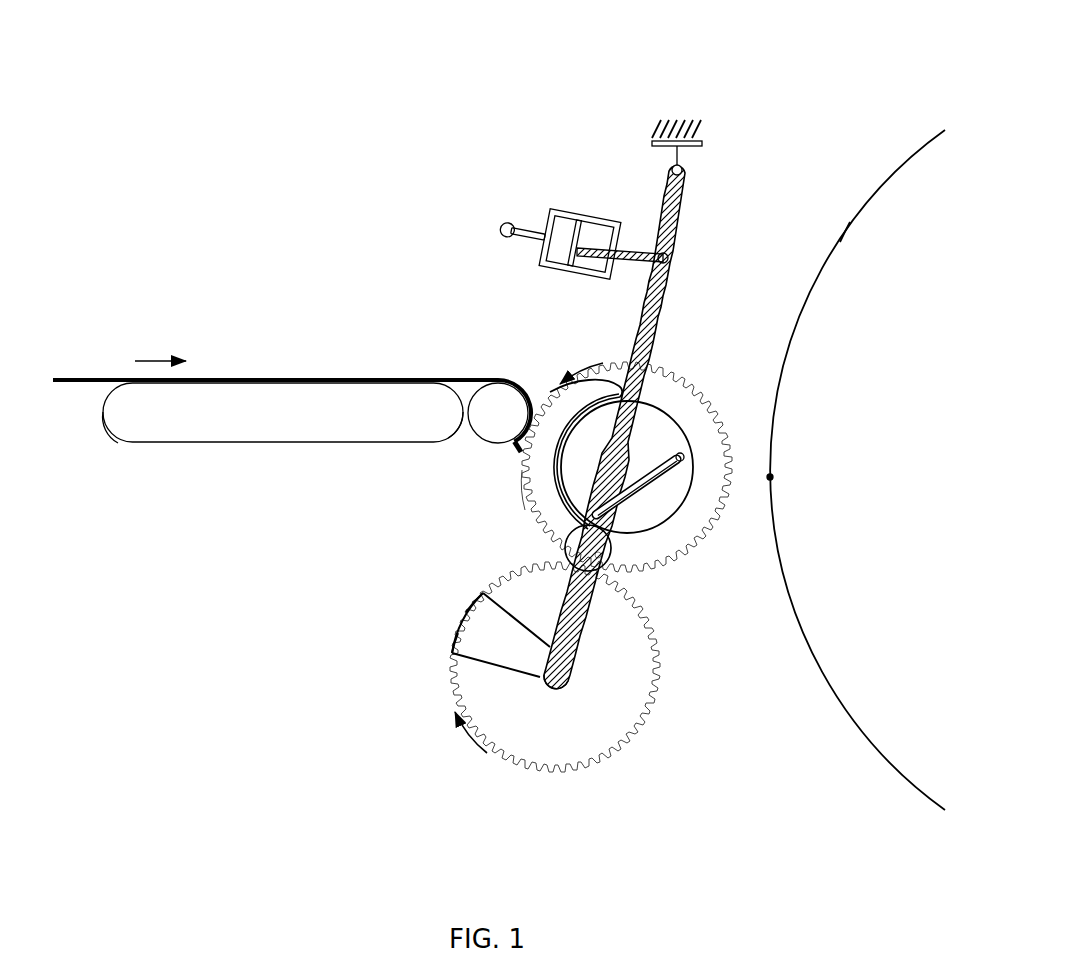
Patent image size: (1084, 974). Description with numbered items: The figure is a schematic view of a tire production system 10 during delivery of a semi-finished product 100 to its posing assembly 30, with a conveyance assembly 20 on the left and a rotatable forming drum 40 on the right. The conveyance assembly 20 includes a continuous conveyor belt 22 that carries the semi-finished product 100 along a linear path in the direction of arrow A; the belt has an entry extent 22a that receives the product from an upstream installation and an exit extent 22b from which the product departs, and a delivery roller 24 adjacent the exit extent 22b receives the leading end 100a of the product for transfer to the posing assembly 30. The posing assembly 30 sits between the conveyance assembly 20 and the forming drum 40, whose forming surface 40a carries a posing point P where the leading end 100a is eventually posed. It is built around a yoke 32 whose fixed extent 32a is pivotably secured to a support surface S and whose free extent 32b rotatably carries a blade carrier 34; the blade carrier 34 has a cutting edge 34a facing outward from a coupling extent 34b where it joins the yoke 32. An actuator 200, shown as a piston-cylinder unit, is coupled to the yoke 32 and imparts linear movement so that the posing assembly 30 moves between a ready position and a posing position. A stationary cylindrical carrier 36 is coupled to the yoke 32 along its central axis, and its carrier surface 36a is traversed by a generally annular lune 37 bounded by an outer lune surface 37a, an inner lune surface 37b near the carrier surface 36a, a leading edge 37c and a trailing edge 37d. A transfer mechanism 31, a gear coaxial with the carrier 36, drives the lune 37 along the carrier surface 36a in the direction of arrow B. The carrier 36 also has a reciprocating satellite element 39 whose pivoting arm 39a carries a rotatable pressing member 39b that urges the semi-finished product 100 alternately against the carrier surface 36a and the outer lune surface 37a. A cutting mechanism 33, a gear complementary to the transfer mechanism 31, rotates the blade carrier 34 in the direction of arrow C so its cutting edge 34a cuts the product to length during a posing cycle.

The tire production system 10 is at (499, 121).
The conveyance assembly 20 is at (257, 289).
The conveyor belt 22 is at (188, 425).
The entry extent 22a is at (118, 443).
The exit extent 22b is at (428, 427).
The delivery roller 24 is at (498, 400).
The posing assembly 30 is at (779, 121).
The transfer mechanism 31 is at (720, 410).
The yoke 32 is at (667, 287).
The fixed extent 32a is at (685, 172).
The free extent 32b is at (580, 652).
The cutting mechanism 33 is at (585, 770).
The blade carrier 34 is at (497, 643).
The cutting edge 34a is at (462, 620).
The coupling extent 34b is at (455, 696).
The cylindrical carrier 36 is at (637, 517).
The carrier surface 36a is at (675, 410).
The lune 37 is at (522, 490).
The outer lune surface 37a is at (565, 532).
The inner lune surface 37b is at (572, 422).
The leading edge 37c is at (607, 560).
The trailing edge 37d is at (610, 365).
The satellite element 39 is at (647, 525).
The pivoting arm 39a is at (683, 460).
The pressing member 39b is at (565, 548).
The forming drum 40 is at (827, 494).
The forming surface 40a is at (845, 232).
The semi-finished product 100 is at (360, 378).
The leading end 100a is at (518, 445).
The actuator 200 is at (528, 228).
The support surface S is at (677, 117).
The posing point P is at (770, 477).
The arrow A is at (160, 348).
The arrow B is at (581, 360).
The arrow C is at (468, 735).